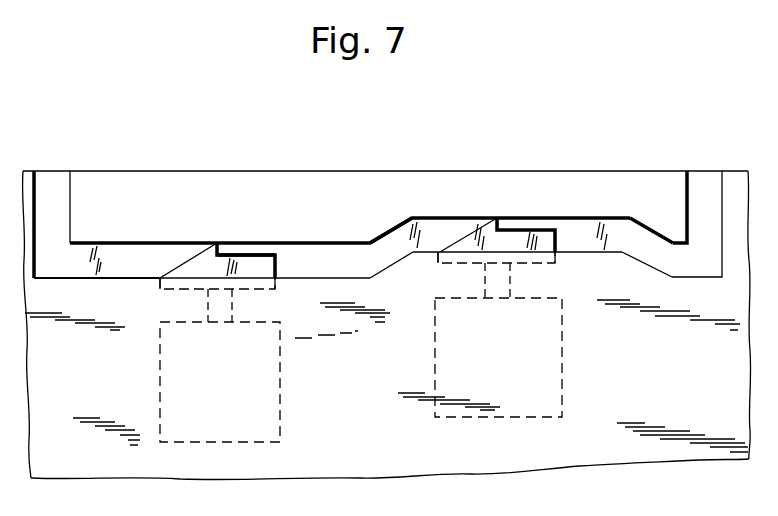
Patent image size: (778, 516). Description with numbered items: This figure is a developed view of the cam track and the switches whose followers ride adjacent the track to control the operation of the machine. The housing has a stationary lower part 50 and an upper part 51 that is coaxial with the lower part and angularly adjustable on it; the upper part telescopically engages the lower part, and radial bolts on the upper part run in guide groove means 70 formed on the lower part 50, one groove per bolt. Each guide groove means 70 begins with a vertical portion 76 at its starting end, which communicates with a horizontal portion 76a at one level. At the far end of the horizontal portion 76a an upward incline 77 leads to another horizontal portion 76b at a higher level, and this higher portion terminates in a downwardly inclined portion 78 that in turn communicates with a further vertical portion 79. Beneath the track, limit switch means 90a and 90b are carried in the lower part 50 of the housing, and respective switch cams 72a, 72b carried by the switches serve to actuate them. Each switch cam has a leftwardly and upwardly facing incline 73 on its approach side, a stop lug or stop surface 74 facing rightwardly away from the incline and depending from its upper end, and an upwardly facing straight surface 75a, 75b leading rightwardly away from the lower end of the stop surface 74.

The stationary lower part 50 is at (97, 478).
The upper part 51 is at (204, 513).
The guide groove means 70 is at (114, 237).
The switch cam 72a is at (272, 268).
The switch cam 72b is at (467, 245).
The incline 73 is at (188, 260).
The stop surface 74 is at (228, 248).
The straight surface 75a is at (257, 251).
The straight surface 75b is at (518, 238).
The vertical portion 76 is at (52, 182).
The horizontal portion 76a is at (98, 272).
The horizontal portion 76b is at (577, 245).
The upward incline 77 is at (388, 240).
The downwardly inclined portion 78 is at (638, 229).
The vertical portion 79 is at (702, 182).
The limit switch means 90a is at (277, 393).
The limit switch means 90b is at (558, 387).